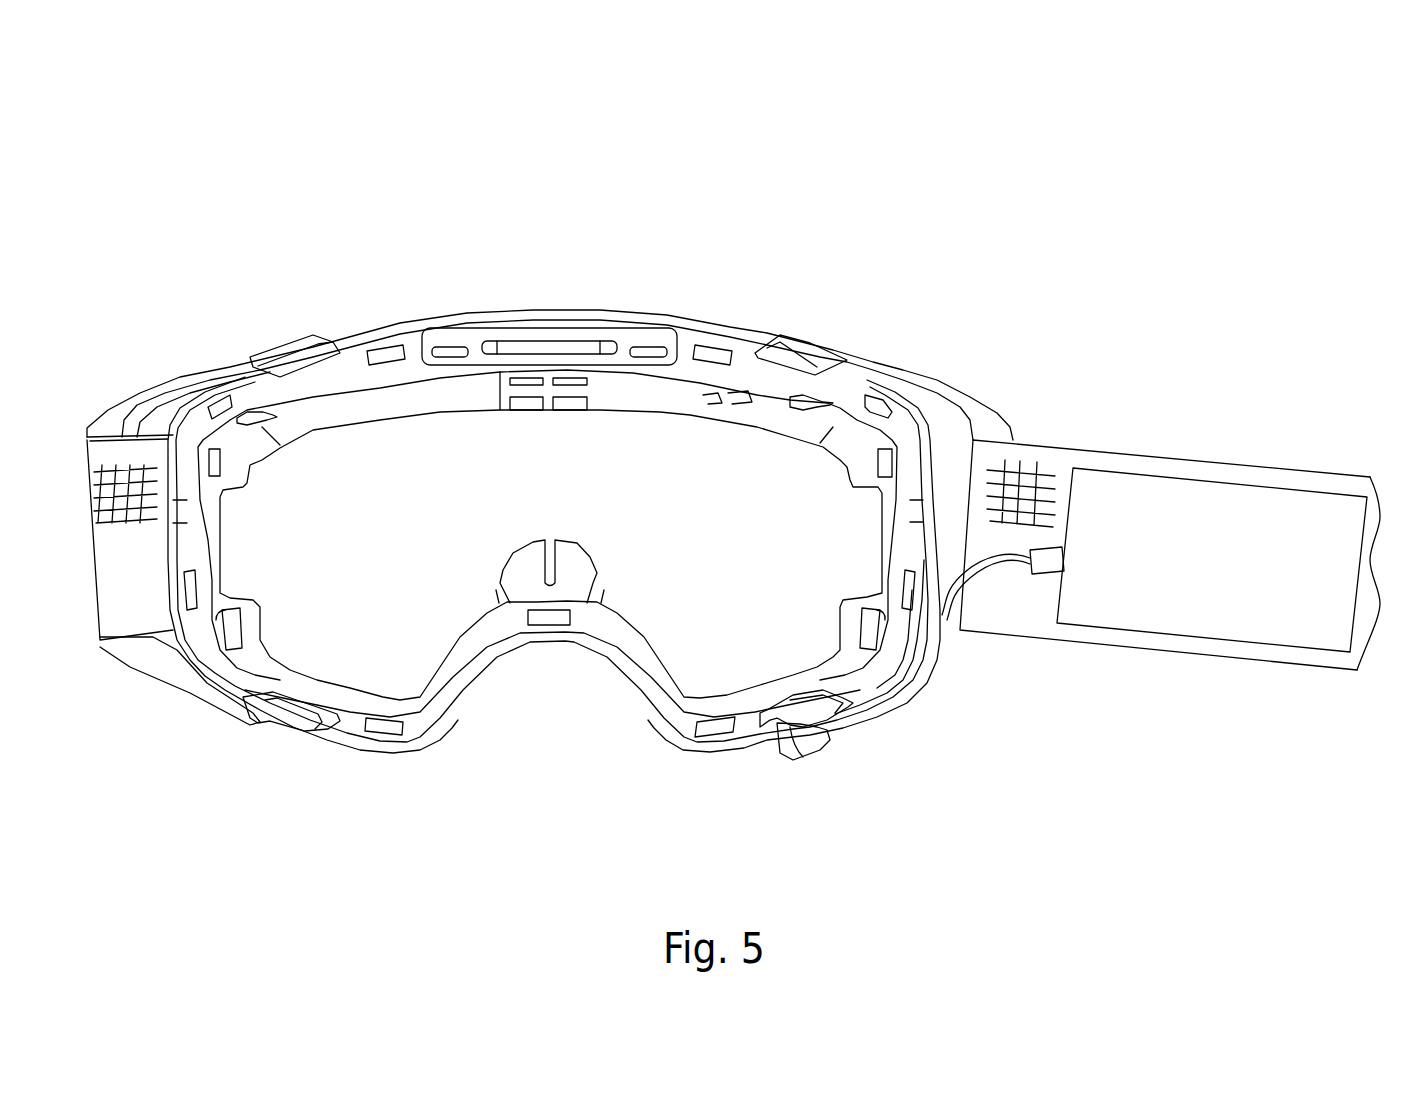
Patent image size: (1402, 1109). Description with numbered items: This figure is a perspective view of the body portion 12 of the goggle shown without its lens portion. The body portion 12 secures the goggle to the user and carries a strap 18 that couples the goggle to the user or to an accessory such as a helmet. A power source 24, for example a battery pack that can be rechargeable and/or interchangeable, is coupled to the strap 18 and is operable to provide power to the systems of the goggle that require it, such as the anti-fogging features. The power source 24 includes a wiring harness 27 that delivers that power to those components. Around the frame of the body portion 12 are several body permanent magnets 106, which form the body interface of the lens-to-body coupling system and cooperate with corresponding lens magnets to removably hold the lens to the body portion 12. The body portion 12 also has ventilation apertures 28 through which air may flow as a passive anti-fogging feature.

The body portion 12 is at (460, 196).
The strap 18 is at (1228, 468).
The power source 24 is at (1217, 617).
The wiring harness 27 is at (867, 725).
The ventilation apertures 28 is at (559, 335).
The body permanent magnet 106 is at (222, 394).